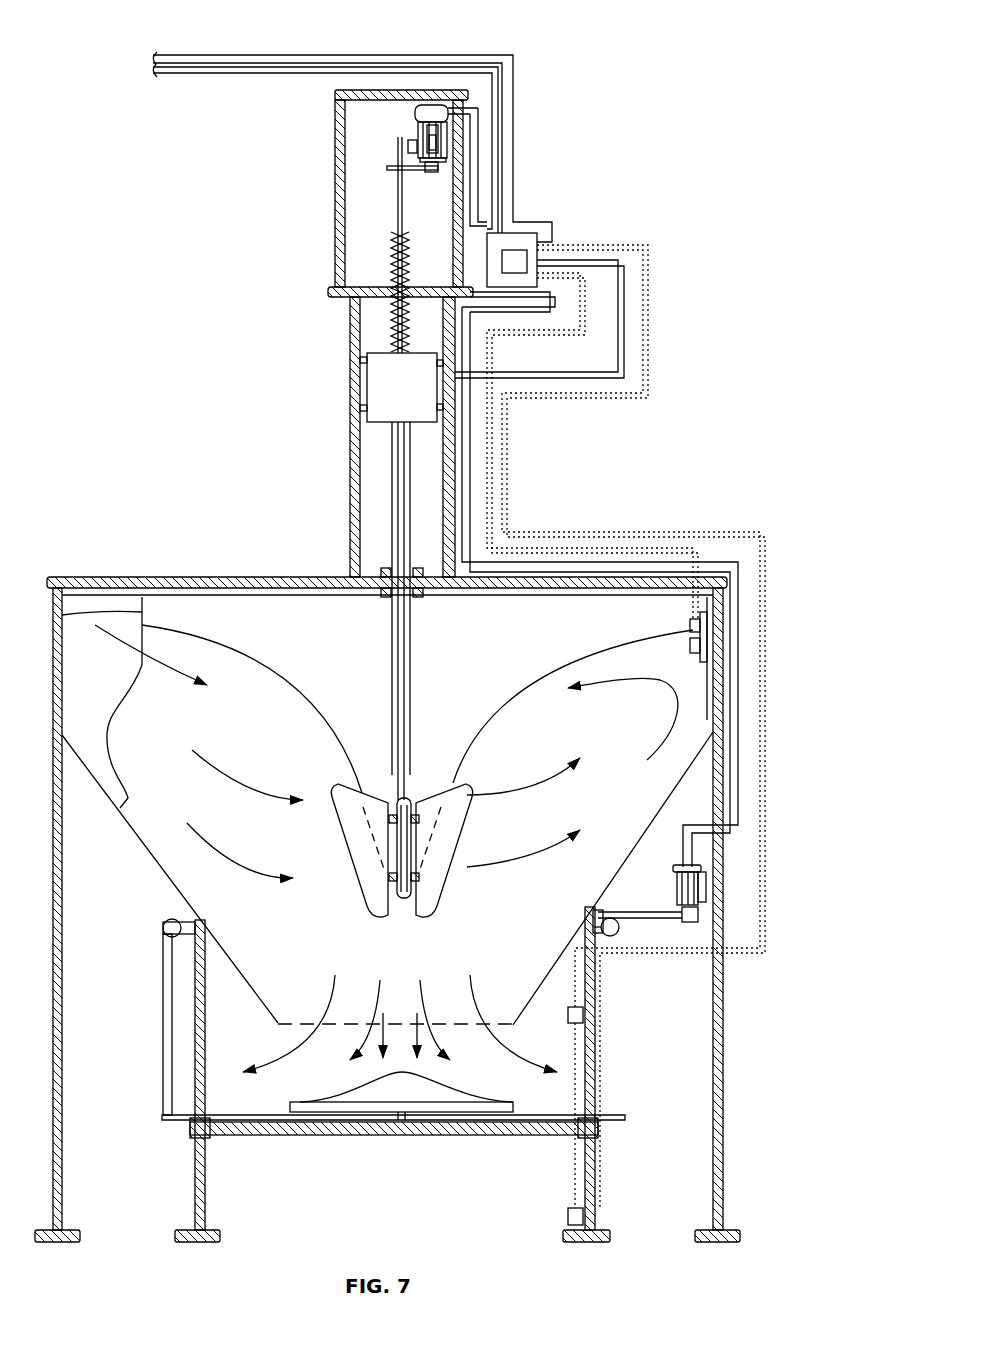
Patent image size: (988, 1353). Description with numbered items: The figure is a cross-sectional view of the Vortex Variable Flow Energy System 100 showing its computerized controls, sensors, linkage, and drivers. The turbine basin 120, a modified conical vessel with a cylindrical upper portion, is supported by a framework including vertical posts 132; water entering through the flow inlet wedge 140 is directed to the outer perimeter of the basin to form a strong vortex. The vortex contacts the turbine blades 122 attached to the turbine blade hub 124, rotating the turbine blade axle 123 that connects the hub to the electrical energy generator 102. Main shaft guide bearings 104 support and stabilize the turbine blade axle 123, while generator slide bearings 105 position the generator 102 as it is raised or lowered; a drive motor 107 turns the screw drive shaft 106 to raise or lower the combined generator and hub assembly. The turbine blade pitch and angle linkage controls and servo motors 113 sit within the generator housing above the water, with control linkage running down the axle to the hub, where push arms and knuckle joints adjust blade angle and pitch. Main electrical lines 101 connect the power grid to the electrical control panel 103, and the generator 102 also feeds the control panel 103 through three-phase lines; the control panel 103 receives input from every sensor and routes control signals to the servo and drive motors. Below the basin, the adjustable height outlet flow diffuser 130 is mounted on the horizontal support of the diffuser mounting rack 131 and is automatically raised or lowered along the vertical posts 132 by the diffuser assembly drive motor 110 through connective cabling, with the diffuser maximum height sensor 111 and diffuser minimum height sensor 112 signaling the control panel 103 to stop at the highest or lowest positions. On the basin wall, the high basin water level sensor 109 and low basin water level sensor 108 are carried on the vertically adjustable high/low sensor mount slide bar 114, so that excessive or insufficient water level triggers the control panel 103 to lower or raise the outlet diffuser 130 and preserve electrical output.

The Vortex Variable Flow Energy System (GVvFES) 100 is at (684, 132).
The main electrical lines 101 is at (171, 57).
The electrical energy generator 102 is at (425, 385).
The electrical control panel 103 is at (514, 250).
The main shaft guide bearings 104 is at (378, 598).
The generator slide bearings 105 is at (438, 408).
The screw drive shaft 106 is at (398, 240).
The drive motor 107 is at (412, 118).
The low basin water level sensor 108 is at (688, 647).
The high basin water level sensor 109 is at (688, 626).
The diffuser assembly drive motor 110 is at (705, 880).
The diffuser maximum height sensor 111 is at (583, 1013).
The diffuser minimum height sensor 112 is at (570, 1218).
The turbine blade pitch and angle linkage controls and servo motors 113 is at (385, 415).
The high/low sensor mount slide bar 114 is at (693, 638).
The turbine basin 120 is at (153, 863).
The turbine blades 122 is at (363, 880).
The turbine blade axle 123 is at (411, 678).
The turbine blade hub 124 is at (402, 900).
The adjustable height outlet flow diffuser 130 is at (347, 1098).
The diffuser mounting rack 131 is at (303, 1137).
The vertical posts 132 is at (193, 1178).
The flow inlet wedge 140 is at (112, 725).